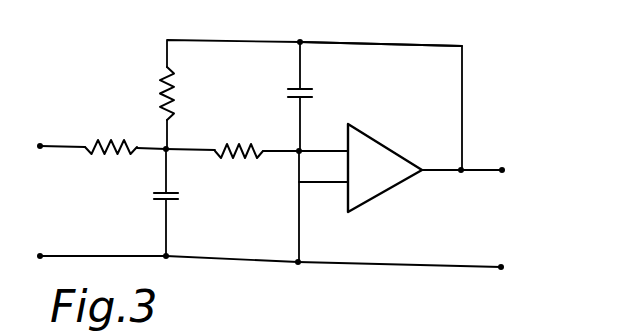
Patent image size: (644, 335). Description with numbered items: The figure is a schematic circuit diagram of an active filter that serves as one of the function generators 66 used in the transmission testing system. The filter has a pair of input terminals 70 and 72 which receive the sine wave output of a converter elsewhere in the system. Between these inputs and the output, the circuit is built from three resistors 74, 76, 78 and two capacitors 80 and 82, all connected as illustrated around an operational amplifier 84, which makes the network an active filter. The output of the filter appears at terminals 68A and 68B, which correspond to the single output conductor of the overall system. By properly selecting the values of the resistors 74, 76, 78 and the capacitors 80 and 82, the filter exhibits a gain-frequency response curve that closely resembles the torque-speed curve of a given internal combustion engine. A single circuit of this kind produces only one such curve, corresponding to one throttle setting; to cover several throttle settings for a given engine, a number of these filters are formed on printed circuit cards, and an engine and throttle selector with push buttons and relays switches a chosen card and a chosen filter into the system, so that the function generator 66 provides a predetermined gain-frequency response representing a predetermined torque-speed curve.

The function generator 66 is at (404, 38).
The input terminal 70 is at (40, 144).
The input terminal 72 is at (40, 254).
The resistor 74 is at (103, 142).
The resistor 76 is at (172, 96).
The resistor 78 is at (225, 158).
The capacitor 80 is at (158, 202).
The capacitor 82 is at (310, 92).
The operational amplifier 84 is at (385, 143).
The output terminal 68A is at (506, 169).
The output terminal 68B is at (505, 266).